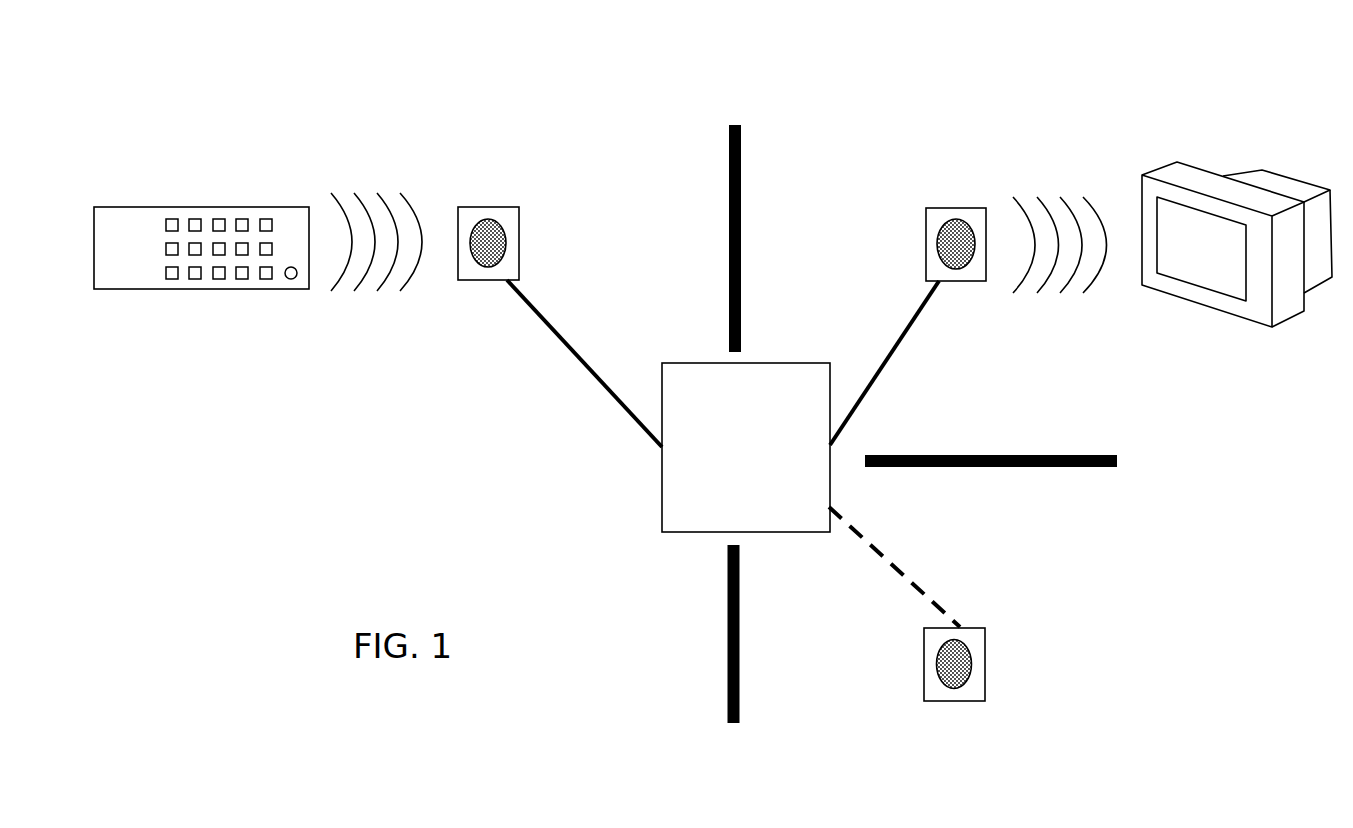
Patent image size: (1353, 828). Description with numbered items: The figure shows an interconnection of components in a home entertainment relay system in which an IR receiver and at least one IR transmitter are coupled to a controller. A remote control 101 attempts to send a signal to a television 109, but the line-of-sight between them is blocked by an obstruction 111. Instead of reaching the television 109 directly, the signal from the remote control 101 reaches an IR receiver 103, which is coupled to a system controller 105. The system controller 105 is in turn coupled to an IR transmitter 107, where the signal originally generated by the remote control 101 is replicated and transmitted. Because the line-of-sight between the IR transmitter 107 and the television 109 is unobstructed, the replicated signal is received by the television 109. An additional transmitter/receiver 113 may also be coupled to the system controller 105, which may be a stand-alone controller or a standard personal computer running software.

The remote control 101 is at (137, 230).
The IR receiver 103 is at (507, 221).
The system controller 105 is at (698, 377).
The IR transmitter 107 is at (939, 222).
The television 109 is at (1189, 198).
The obstruction 111 is at (729, 175).
The transmitter/receiver 113 is at (972, 688).